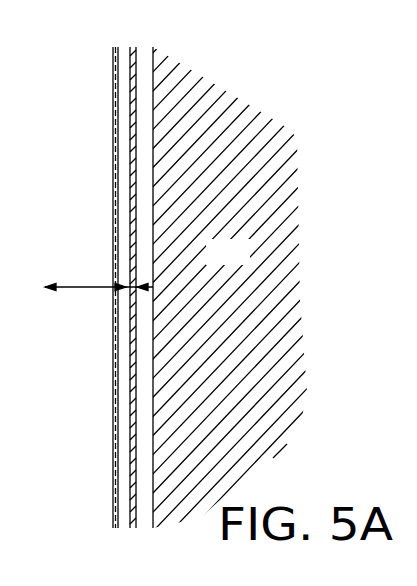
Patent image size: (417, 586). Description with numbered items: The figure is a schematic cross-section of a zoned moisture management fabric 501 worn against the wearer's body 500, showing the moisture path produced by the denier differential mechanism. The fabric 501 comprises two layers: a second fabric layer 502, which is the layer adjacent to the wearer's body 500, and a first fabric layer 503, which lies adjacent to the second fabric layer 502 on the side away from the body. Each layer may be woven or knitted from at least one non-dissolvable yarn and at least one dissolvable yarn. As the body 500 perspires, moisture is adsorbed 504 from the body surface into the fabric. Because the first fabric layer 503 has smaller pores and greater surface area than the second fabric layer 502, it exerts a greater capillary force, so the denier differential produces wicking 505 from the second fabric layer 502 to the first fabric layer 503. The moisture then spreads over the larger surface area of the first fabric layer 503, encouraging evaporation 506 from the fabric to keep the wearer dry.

The wearer's body 500 is at (247, 262).
The zoned moisture management fabric 501 is at (108, 293).
The second fabric layer 502 is at (136, 54).
The first fabric layer 503 is at (113, 505).
The moisture adsorption 504 is at (146, 285).
The wicking 505 is at (129, 289).
The moisture evaporation 506 is at (62, 286).